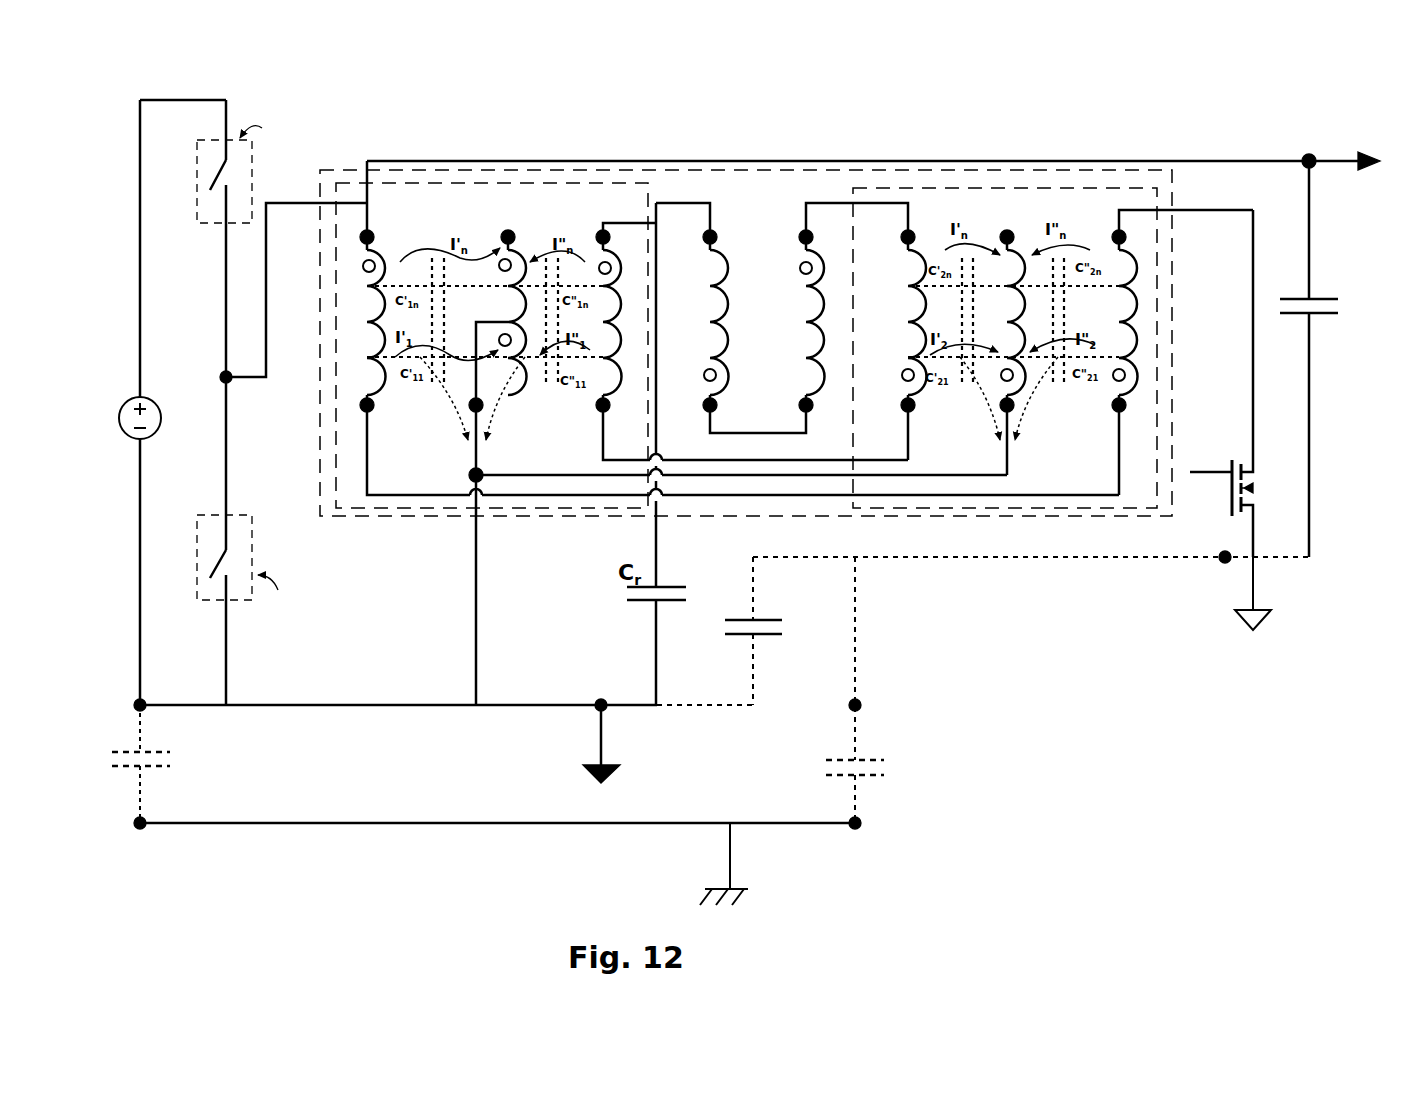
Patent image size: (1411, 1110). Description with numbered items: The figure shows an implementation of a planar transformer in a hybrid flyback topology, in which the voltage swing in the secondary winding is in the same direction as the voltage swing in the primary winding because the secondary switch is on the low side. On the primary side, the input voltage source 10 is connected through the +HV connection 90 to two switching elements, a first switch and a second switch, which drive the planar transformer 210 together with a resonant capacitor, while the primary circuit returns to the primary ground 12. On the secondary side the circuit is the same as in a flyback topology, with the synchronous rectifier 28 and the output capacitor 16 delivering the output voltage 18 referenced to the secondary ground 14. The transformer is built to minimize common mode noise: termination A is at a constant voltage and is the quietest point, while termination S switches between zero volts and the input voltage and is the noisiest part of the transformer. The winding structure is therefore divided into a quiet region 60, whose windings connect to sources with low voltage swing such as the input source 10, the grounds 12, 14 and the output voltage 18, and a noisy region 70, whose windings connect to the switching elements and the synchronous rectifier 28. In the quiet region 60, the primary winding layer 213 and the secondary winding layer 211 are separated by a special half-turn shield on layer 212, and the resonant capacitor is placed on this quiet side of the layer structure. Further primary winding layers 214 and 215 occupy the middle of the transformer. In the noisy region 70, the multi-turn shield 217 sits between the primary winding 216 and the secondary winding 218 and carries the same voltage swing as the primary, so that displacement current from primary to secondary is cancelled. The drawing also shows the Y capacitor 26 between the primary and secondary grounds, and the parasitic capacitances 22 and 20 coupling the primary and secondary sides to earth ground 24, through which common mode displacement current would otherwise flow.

The +HV connection 90 is at (140, 92).
The input voltage source 10 is at (102, 386).
The secondary winding layer 211 is at (376, 262).
The half-turn shield layer 212 is at (517, 262).
The primary winding layer 213 is at (615, 262).
The primary winding layer 214 is at (725, 262).
The primary winding layer 215 is at (823, 262).
The primary winding 216 is at (925, 262).
The multi-turn shield 217 is at (1023, 262).
The secondary winding layer 218 is at (1137, 262).
The planar transformer 210 is at (1108, 520).
The quiet region 60 is at (403, 514).
The noisy region 70 is at (1160, 270).
The output voltage Vo 18 is at (1278, 142).
The output capacitor 16 is at (1338, 287).
The synchronous rectifier 28 is at (1240, 468).
The secondary ground GNDs 14 is at (1298, 598).
The primary ground GNDp 12 is at (612, 716).
The parasitic capacitance Cp 22 is at (178, 760).
The Y capacitor Cy 26 is at (762, 642).
The parasitic capacitance Cs 20 is at (882, 742).
The earth ground 24 is at (754, 897).